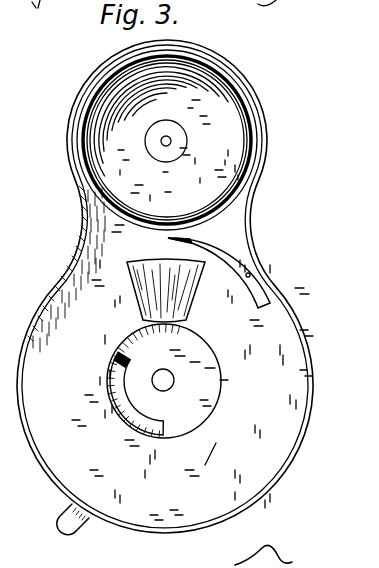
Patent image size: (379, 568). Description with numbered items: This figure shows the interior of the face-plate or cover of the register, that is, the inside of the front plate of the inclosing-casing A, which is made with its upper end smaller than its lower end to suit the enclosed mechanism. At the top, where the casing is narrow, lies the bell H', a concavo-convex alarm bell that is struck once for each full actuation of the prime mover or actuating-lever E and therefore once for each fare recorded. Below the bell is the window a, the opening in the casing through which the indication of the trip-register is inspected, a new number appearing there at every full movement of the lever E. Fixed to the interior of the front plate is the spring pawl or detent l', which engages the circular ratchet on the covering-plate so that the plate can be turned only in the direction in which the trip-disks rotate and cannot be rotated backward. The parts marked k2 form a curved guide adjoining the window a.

The inclosing-casing A is at (177, 286).
The prime mover or actuating-lever E is at (174, 280).
The bell H' is at (167, 140).
The window a is at (140, 291).
The curved guide arm k2 is at (218, 294).
The spring pawl or detent l' is at (164, 381).